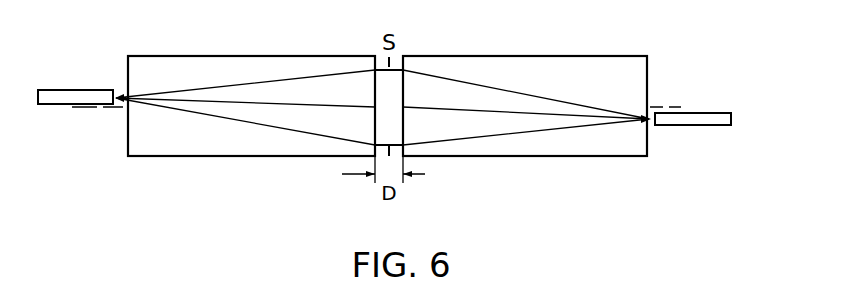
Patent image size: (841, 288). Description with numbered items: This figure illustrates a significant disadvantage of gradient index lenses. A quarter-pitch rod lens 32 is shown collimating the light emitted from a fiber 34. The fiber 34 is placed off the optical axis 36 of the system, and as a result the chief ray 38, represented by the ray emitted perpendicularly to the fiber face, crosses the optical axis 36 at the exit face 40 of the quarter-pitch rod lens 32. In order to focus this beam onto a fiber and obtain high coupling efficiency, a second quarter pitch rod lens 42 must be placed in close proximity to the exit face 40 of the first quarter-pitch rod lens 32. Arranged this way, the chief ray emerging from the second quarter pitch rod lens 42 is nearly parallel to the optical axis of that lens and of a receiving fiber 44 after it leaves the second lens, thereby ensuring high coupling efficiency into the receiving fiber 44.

The quarter-pitch rod lens 32 is at (193, 65).
The fiber 34 is at (69, 92).
The optical axis 36 is at (87, 110).
The chief ray 38 is at (392, 109).
The exit face 40 is at (376, 92).
The second quarter pitch rod lens 42 is at (609, 147).
The receiving fiber 44 is at (708, 112).